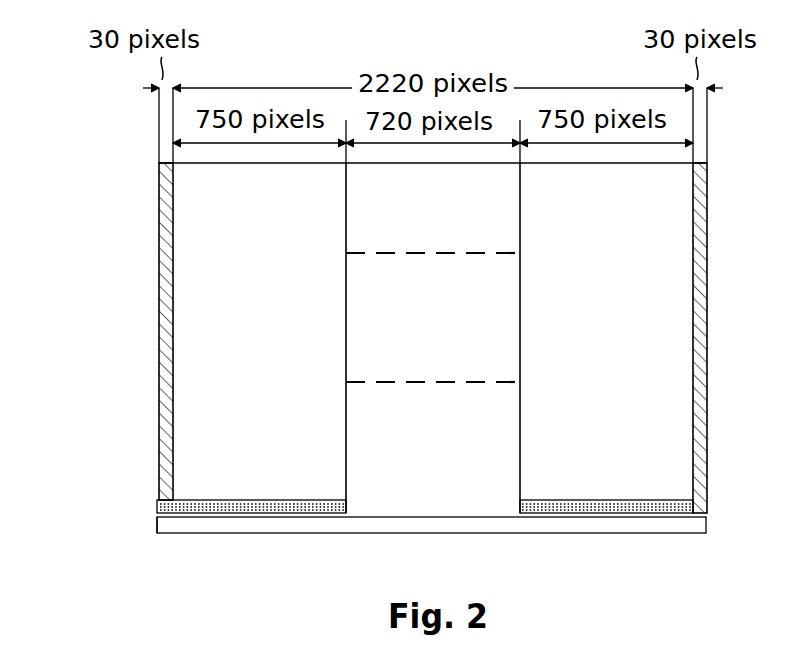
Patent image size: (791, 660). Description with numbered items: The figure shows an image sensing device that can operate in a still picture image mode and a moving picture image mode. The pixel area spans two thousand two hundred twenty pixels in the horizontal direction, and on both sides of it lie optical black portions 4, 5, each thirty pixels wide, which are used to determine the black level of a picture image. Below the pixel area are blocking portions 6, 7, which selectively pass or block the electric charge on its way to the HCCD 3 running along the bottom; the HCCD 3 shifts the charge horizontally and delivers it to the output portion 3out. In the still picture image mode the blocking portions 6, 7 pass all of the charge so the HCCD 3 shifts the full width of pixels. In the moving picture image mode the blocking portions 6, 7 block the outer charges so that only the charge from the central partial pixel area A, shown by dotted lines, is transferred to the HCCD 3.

The HCCD 3 is at (536, 525).
The output portion 3out is at (155, 519).
The optical black portion 4 is at (167, 320).
The optical black portion 5 is at (702, 330).
The blocking portion 6 is at (168, 503).
The blocking portion 7 is at (648, 508).
The partial pixel area A is at (470, 298).